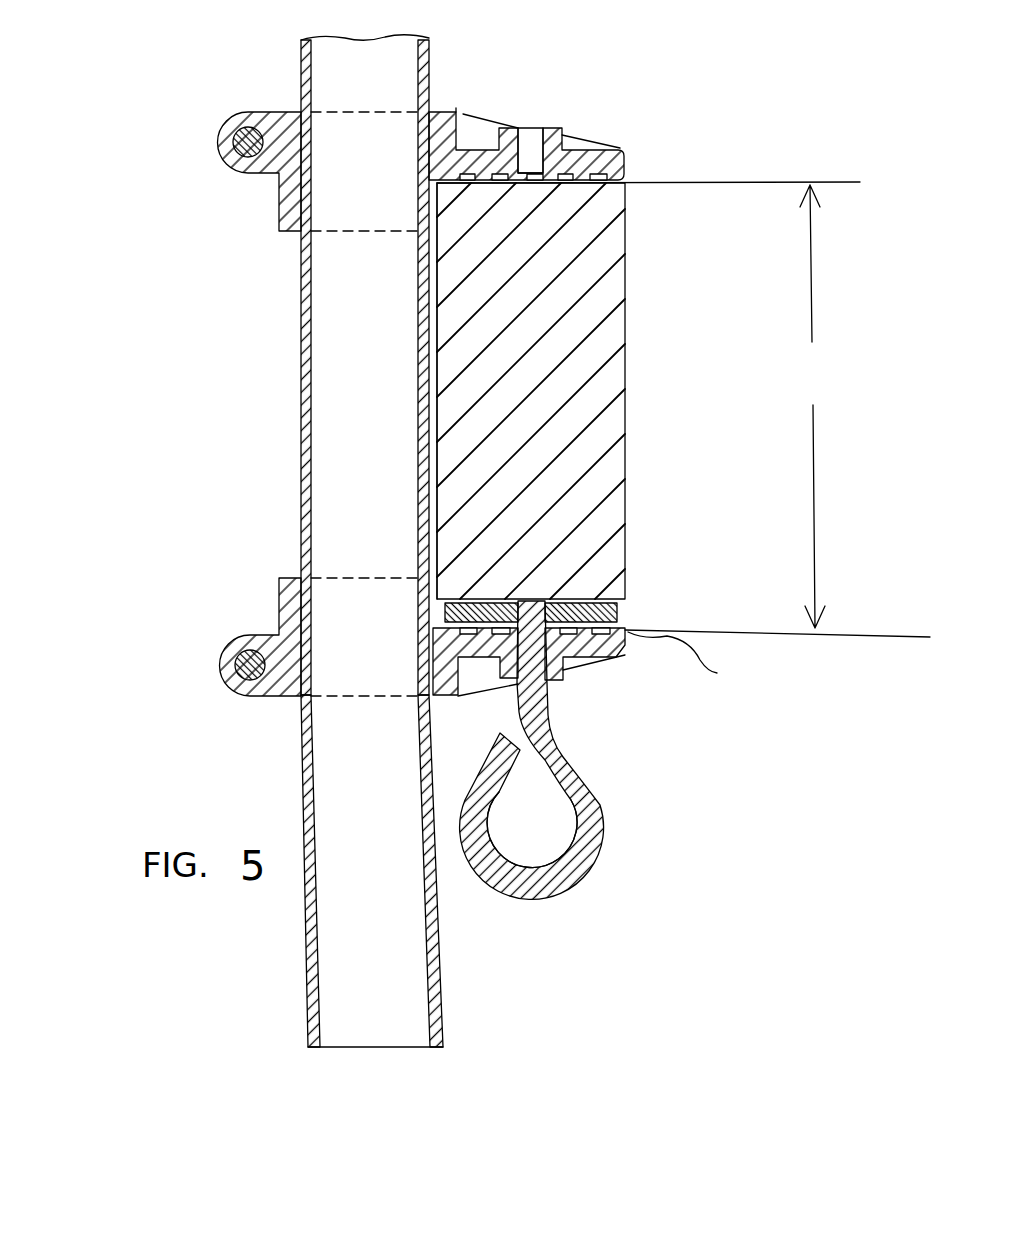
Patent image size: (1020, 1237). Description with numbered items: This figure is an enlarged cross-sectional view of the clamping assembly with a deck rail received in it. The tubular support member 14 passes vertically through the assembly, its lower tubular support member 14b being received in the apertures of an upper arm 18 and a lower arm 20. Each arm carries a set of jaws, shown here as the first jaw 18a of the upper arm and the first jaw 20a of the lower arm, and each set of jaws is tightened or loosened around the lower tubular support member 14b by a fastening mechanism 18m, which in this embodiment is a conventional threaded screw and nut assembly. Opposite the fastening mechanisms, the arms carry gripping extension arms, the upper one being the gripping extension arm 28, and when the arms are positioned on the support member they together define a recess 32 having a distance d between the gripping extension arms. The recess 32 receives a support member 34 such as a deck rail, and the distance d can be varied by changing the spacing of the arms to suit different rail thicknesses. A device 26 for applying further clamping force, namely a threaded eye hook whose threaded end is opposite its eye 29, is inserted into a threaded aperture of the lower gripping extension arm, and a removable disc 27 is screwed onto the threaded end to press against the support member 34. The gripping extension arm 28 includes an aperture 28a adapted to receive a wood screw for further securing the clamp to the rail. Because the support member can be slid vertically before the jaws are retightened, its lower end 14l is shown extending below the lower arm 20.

The tubular support member 14 is at (430, 53).
The lower tubular support member 14b is at (382, 356).
The lower end 14l is at (418, 1047).
The upper arm 18 is at (175, 144).
The first jaw 18a is at (272, 112).
The fastening mechanism 18m is at (238, 172).
The lower arm 20 is at (321, 634).
The first jaw 20a is at (265, 637).
The device for applying further clamping force 26 is at (572, 732).
The removable disc 27 is at (623, 607).
The gripping extension arm 28 is at (583, 108).
The aperture 28a is at (533, 135).
The eye 29 is at (532, 830).
The recess 32 is at (433, 472).
The support member 34 is at (607, 342).
The distance d is at (683, 427).